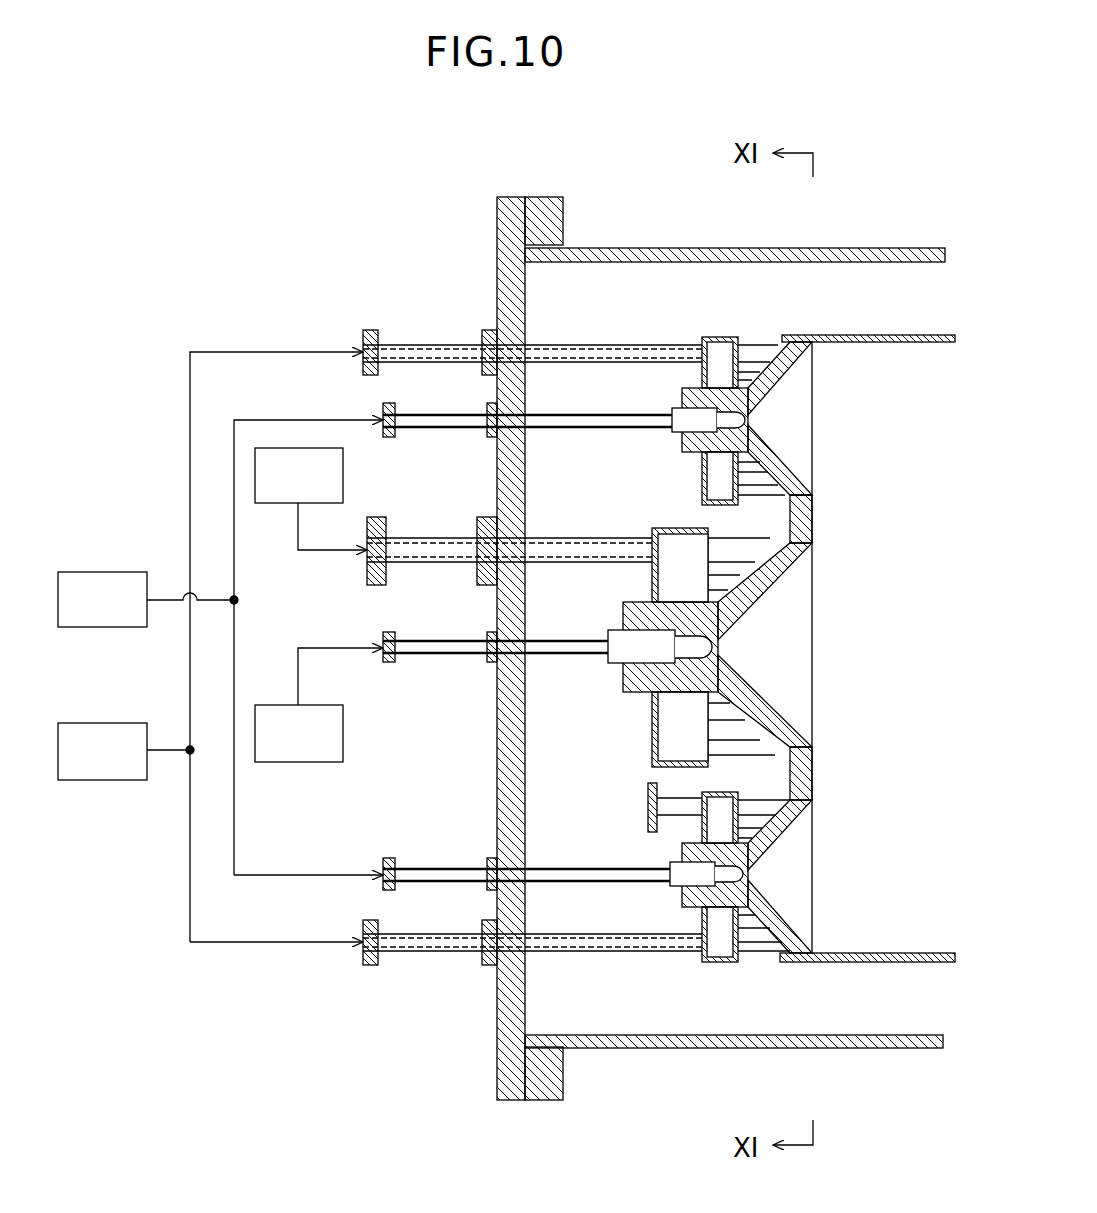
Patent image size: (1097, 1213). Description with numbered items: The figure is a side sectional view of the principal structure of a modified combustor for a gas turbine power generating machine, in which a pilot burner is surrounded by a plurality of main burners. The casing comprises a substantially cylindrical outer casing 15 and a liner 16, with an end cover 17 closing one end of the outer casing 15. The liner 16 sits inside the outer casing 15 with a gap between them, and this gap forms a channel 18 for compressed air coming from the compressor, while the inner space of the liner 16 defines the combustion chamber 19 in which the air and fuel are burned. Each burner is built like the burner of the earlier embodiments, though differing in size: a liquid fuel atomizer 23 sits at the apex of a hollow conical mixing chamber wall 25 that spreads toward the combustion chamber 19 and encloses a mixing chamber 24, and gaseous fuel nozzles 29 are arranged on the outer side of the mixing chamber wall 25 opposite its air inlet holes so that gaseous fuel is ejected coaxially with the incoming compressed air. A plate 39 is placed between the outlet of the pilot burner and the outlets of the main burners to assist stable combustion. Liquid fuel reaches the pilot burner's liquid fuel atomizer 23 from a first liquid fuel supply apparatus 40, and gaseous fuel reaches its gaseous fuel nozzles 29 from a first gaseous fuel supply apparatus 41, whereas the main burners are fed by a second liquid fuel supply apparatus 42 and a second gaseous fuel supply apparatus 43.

The outer casing 15 is at (668, 248).
The liner 16 is at (868, 335).
The end cover 17 is at (497, 247).
The channel 18 is at (812, 300).
The combustion chamber 19 is at (888, 653).
The liquid fuel atomizer 23 is at (672, 428).
The mixing chamber 24 is at (800, 433).
The mixing chamber wall 25 is at (812, 485).
The gaseous fuel nozzles 29 is at (757, 337).
The plate 39 is at (812, 515).
The first liquid fuel supply apparatus 40 is at (270, 705).
The first gaseous fuel supply apparatus 41 is at (270, 503).
The second liquid fuel supply apparatus 42 is at (105, 572).
The second gaseous fuel supply apparatus 43 is at (105, 723).